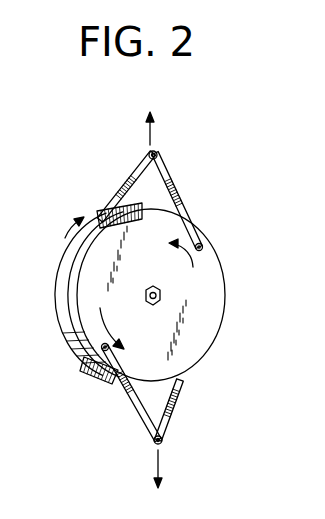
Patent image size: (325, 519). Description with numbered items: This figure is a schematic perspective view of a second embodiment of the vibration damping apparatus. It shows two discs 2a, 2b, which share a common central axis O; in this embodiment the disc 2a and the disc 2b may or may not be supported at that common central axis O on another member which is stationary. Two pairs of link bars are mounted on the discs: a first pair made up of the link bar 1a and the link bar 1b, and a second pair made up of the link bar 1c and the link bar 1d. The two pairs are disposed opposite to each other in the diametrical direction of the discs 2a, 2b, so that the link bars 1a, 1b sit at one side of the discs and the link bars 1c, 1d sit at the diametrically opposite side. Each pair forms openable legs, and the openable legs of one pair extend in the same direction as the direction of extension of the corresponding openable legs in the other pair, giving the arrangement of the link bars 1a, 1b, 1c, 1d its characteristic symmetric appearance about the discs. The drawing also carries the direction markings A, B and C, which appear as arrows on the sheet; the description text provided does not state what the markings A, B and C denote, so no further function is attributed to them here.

The link bar 1a is at (184, 207).
The link bar 1b is at (128, 178).
The link bar 1c is at (130, 400).
The link bar 1d is at (187, 375).
The disc 2a is at (213, 291).
The disc 2b is at (65, 307).
The common central axis O is at (160, 293).
The direction A is at (161, 304).
The direction B is at (146, 295).
The rotation direction C is at (74, 216).